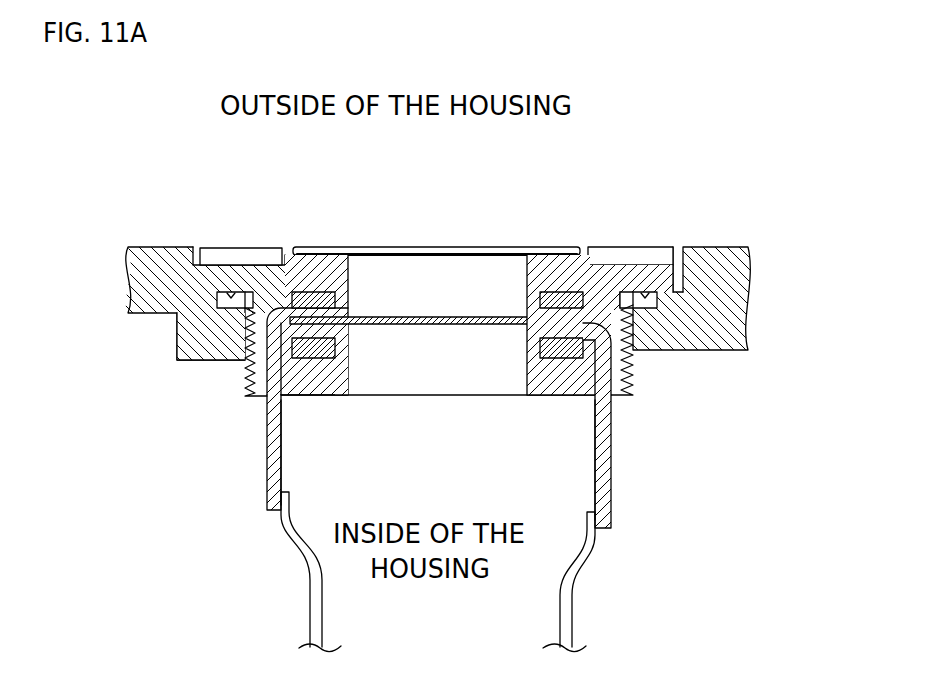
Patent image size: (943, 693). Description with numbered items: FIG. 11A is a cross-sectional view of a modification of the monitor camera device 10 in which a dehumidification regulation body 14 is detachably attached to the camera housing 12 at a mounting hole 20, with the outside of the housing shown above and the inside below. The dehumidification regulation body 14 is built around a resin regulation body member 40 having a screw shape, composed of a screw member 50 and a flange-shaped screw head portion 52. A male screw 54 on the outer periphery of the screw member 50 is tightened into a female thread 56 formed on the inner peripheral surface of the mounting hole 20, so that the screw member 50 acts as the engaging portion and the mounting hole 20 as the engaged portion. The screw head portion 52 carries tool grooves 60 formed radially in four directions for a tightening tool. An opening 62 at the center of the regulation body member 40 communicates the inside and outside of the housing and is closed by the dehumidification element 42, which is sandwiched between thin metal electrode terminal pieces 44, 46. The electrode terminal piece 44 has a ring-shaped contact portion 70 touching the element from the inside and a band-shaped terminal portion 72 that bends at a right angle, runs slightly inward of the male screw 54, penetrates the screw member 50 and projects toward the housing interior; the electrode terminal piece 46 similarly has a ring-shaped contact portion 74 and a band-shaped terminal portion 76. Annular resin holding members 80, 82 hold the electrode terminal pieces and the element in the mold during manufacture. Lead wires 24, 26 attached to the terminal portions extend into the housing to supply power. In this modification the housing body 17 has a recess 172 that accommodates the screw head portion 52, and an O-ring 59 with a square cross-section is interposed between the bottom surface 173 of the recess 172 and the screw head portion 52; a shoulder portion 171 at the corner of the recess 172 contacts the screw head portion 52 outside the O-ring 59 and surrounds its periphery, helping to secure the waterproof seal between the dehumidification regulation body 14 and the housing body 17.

The monitor camera device 10 is at (748, 112).
The camera housing 12 is at (707, 226).
The dehumidification regulation body 14 is at (574, 226).
The housing body 17 is at (725, 252).
The mounting hole 20 is at (245, 365).
The lead wire 24 is at (572, 572).
The lead wire 26 is at (308, 572).
The regulation body member 40 is at (530, 244).
The dehumidification element 42 is at (447, 316).
The electrode terminal piece 44 is at (648, 449).
The electrode terminal piece 46 is at (243, 468).
The screw member 50 is at (235, 404).
The screw head portion 52 is at (253, 262).
The male screw 54 is at (245, 372).
The female thread 56 is at (245, 340).
The O-ring 59 is at (217, 300).
The tool groove 60 is at (230, 262).
The opening 62 is at (358, 318).
The contact portion 70 is at (542, 340).
The terminal portion 72 is at (595, 482).
The contact portion 74 is at (360, 326).
The terminal portion 76 is at (282, 468).
The holding member 80 is at (316, 362).
The holding member 82 is at (317, 290).
The shoulder portion 171 is at (672, 300).
The recess 172 is at (678, 246).
The bottom surface 173 is at (643, 312).